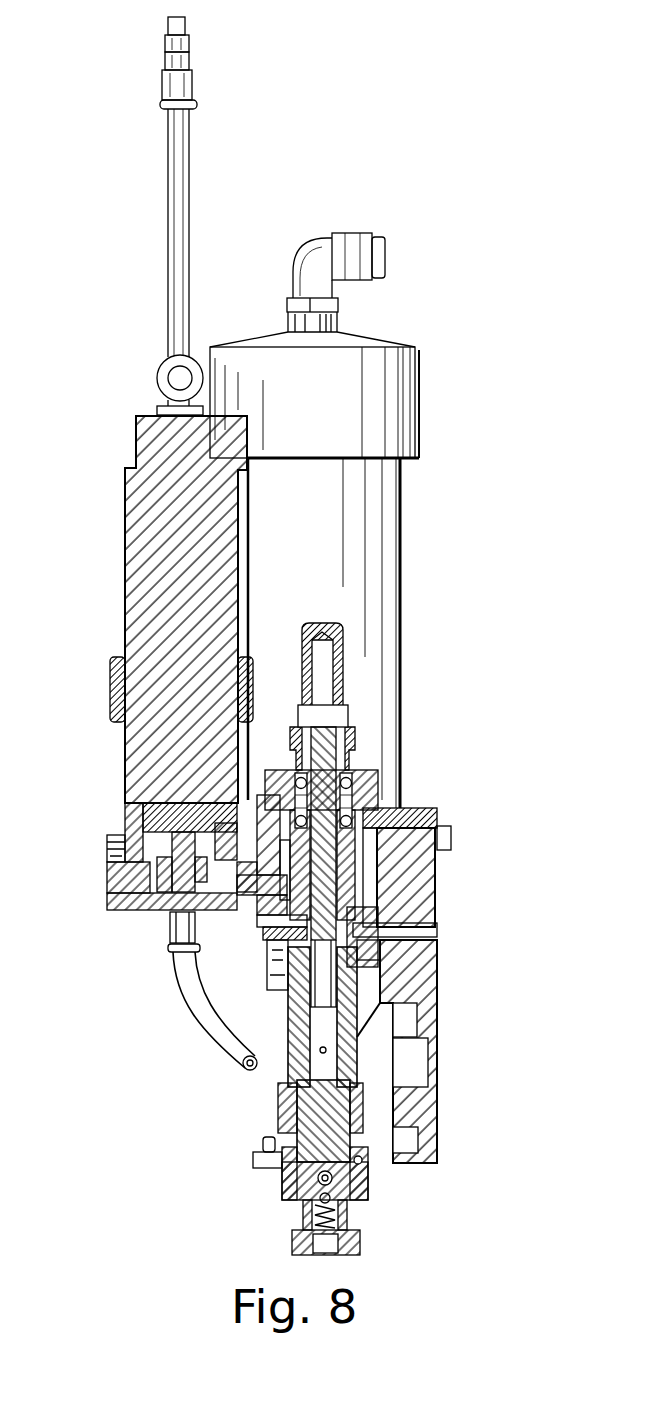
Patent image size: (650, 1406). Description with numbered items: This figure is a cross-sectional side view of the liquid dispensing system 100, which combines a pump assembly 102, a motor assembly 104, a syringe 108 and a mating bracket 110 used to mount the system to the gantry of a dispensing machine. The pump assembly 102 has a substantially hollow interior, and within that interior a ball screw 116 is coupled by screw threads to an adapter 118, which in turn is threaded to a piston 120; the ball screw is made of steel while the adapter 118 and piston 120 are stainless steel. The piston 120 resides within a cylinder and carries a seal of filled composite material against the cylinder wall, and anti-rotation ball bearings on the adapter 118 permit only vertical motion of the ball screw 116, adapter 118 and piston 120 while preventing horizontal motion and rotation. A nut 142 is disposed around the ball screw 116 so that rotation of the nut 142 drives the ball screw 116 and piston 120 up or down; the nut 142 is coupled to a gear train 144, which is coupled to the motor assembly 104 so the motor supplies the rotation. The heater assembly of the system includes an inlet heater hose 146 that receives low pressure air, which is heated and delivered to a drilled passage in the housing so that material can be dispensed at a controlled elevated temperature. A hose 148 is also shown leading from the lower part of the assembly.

The liquid dispensing system 100 is at (424, 158).
The pump assembly 102 is at (375, 761).
The motor assembly 104 is at (125, 546).
The syringe 108 is at (388, 540).
The mating bracket 110 is at (441, 1089).
The ball screw 116 is at (327, 730).
The adapter 118 is at (322, 1027).
The piston 120 is at (330, 1148).
The nut 142 is at (345, 862).
The gear train 144 is at (151, 899).
The inlet heater hose 146 is at (182, 172).
The fluid feed hose 148 is at (206, 1044).